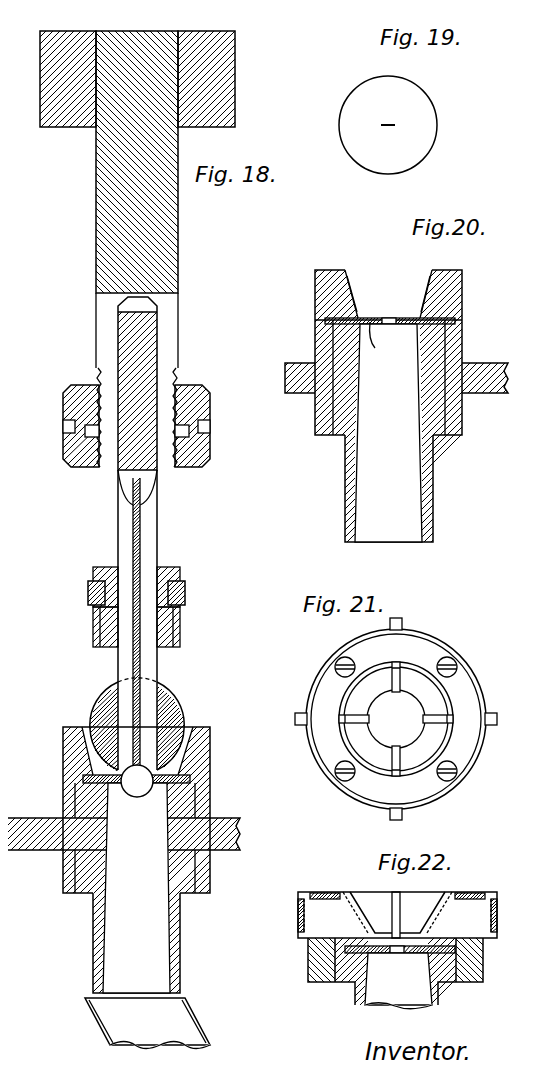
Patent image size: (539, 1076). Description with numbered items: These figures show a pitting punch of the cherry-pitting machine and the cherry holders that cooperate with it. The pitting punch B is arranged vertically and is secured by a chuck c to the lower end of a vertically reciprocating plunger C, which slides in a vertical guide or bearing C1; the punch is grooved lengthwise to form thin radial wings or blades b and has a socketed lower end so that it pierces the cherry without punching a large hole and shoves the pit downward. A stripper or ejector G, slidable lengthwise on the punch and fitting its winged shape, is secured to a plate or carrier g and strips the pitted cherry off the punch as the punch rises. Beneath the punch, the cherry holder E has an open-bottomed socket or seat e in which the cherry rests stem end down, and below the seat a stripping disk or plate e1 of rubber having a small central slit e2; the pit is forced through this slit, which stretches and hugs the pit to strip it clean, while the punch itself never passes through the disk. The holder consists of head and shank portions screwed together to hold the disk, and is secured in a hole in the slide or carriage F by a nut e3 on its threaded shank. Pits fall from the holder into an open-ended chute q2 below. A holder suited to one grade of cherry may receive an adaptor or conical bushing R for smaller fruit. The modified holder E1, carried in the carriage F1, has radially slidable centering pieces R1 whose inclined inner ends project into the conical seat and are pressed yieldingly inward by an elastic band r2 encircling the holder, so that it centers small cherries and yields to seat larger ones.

In FIG. 18, the vertical guide or bearing C1 is at (232, 80).
In FIG. 18, the plunger or holder C is at (103, 178).
In FIG. 18, the chuck c is at (104, 440).
In FIG. 18, the pitting punch B is at (112, 527).
In FIG. 18, the radial wing or blade b is at (141, 545).
In FIG. 18, the plate or carrier g is at (185, 597).
In FIG. 18, the stripper or ejector G is at (180, 630).
In FIG. 18, the cherry holder E is at (116, 772).
In FIG. 18, the socket or seat e is at (210, 756).
In FIG. 20, the socket or seat e is at (315, 297).
In FIG. 18, the stripping disk or plate e1 is at (136, 795).
In FIG. 19, the stripping disk or plate e1 is at (388, 125).
In FIG. 20, the stripping disk or plate e1 is at (383, 344).
In FIG. 22, the stripping disk or plate e1 is at (378, 953).
In FIG. 18, the central slit e2 is at (168, 790).
In FIG. 19, the central slit e2 is at (395, 125).
In FIG. 20, the central slit e2 is at (392, 318).
In FIG. 22, the central slit e2 is at (398, 948).
In FIG. 18, the slide or carriage F is at (36, 832).
In FIG. 18, the nut e3 is at (78, 877).
In FIG. 20, the nut e3 is at (335, 428).
In FIG. 18, the chute q2 is at (147, 1023).
In FIG. 20, the holder of modified construction E1 is at (413, 358).
In FIG. 21, the holder of modified construction E1 is at (382, 719).
In FIG. 22, the holder of modified construction E1 is at (397, 898).
In FIG. 20, the slide or carriage F1 is at (316, 386).
In FIG. 20, the adaptor or conical bushing R is at (415, 270).
In FIG. 21, the centering piece R1 is at (420, 745).
In FIG. 22, the centering piece R1 is at (393, 898).
In FIG. 21, the elastic band r2 is at (306, 732).
In FIG. 22, the elastic band r2 is at (298, 922).